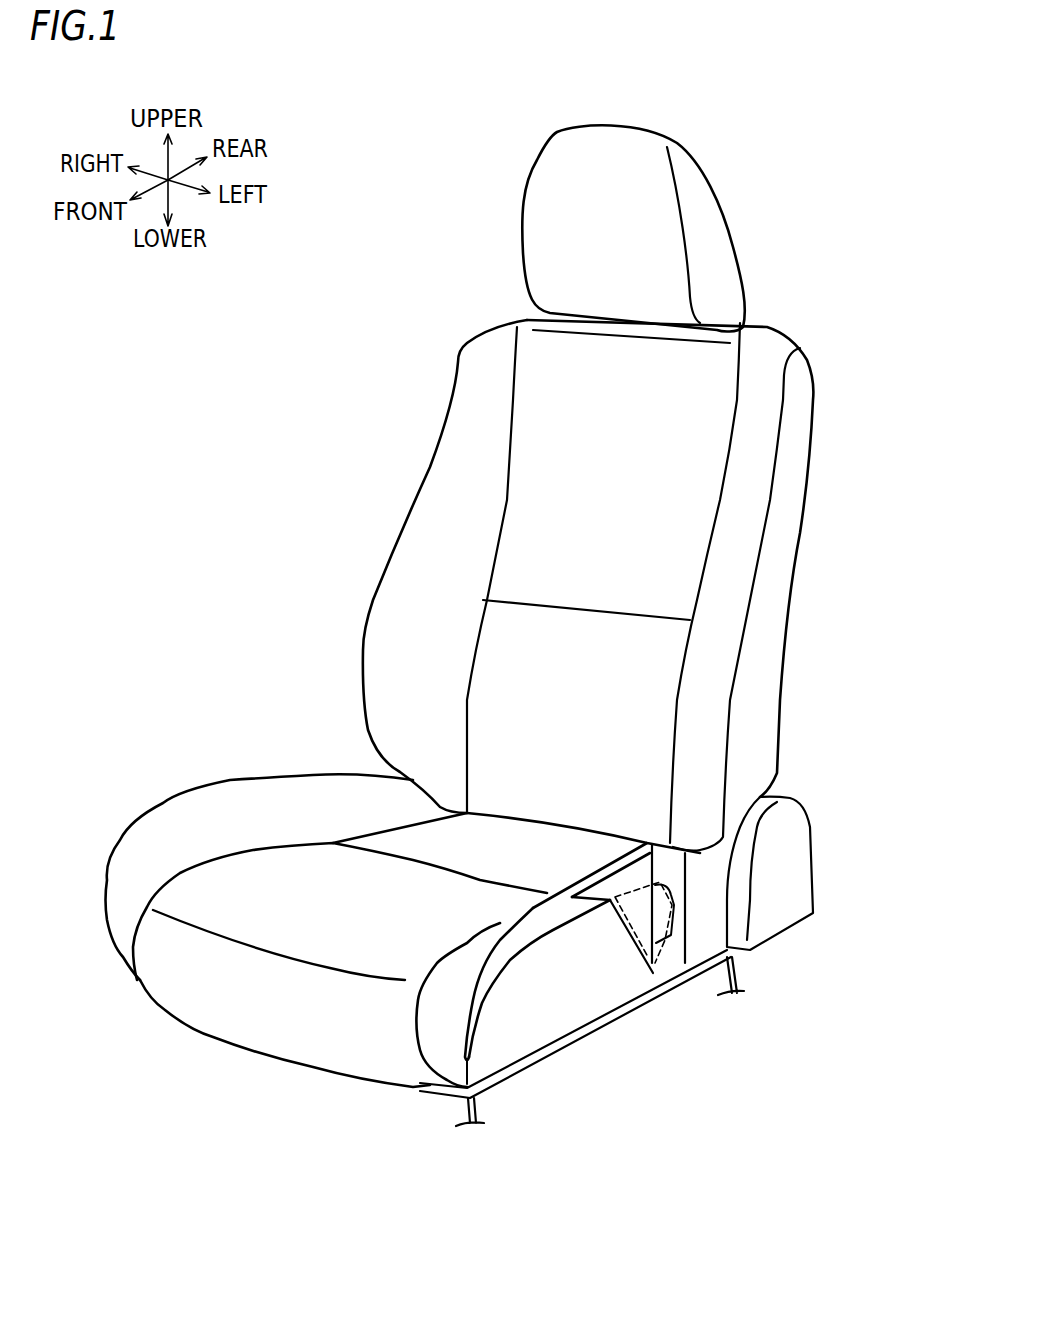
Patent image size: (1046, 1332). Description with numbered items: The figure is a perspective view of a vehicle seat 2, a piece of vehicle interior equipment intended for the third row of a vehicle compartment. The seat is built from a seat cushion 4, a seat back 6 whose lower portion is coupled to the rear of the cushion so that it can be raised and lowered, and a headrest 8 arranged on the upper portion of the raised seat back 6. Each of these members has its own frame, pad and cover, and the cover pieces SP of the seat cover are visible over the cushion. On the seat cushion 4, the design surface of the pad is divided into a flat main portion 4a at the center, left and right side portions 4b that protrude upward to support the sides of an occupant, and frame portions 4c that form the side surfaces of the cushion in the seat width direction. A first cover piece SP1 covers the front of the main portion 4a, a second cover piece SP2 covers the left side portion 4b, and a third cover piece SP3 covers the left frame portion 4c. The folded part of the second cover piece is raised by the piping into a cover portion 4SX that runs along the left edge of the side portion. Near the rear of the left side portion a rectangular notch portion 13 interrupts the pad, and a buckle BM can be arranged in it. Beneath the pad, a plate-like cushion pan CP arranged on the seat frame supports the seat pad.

The vehicle seat 2 is at (771, 170).
The headrest 8 is at (517, 257).
The seat back 6 is at (433, 426).
The seat cushion 4 is at (199, 780).
The seat pad SP is at (437, 843).
The main portion 4a is at (279, 932).
The side portion 4b is at (391, 891).
The frame portion 4c is at (561, 978).
The cover portion 4SX is at (488, 1011).
The first cover piece SP1 is at (283, 1010).
The second cover piece SP2 is at (440, 1030).
The third cover piece SP3 is at (543, 1013).
The notch portion 13 is at (642, 881).
The buckle BM is at (673, 905).
The cushion pan CP is at (673, 990).